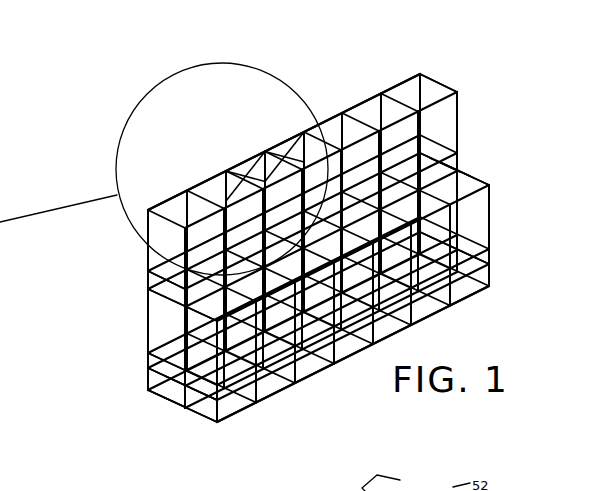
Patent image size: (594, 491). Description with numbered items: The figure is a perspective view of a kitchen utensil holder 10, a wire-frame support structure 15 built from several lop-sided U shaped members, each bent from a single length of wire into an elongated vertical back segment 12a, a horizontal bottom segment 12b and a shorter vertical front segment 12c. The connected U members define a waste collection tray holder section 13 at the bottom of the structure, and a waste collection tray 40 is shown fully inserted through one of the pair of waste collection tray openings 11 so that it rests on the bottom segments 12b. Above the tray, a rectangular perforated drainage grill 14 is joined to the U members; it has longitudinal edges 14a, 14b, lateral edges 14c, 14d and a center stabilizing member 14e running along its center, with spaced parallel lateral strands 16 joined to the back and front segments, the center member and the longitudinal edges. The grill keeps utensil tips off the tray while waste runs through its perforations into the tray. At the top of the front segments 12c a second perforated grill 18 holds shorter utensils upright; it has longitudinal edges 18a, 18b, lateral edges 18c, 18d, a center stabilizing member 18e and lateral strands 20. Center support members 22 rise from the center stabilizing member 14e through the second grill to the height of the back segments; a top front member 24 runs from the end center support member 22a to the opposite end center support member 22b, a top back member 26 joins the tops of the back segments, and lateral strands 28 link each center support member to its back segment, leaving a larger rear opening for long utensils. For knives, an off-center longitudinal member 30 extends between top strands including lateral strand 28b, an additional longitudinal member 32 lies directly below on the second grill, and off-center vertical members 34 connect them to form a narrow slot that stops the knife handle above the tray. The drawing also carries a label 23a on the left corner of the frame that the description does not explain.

The kitchen utensil holder 10 is at (560, 348).
The waste collection tray opening 11 is at (213, 427).
The vertical back segment 12a is at (150, 278).
The horizontal bottom segment 12b is at (165, 395).
The vertical front segment 12c is at (220, 405).
The waste collection tray holder section 13 is at (143, 372).
The perforated drainage grill 14 is at (147, 365).
The longitudinal edge 14a is at (153, 353).
The longitudinal edge 14b is at (308, 352).
The lateral edge 14c is at (175, 372).
The lateral edge 14d is at (490, 273).
The center stabilizing member 14e is at (205, 375).
The support structure 15 is at (490, 220).
The lateral strands 16 is at (272, 377).
The second rectangular perforated grill 18 is at (463, 182).
The longitudinal edge 18a is at (160, 272).
The longitudinal edge 18b is at (490, 193).
The lateral edge 18c is at (155, 293).
The lateral edge 18d is at (470, 170).
The center stabilizing member 18e is at (470, 165).
The lateral strands 20 is at (400, 262).
The center support members 22 is at (297, 150).
The center support member 22a is at (185, 197).
The center support member 22b is at (460, 110).
The corner post 23a is at (152, 221).
The top front member 24 is at (265, 150).
The top back member 26 is at (240, 160).
The lateral strands 28 is at (197, 188).
The lateral strand 28b is at (432, 84).
The off-center longitudinal member 30 is at (303, 147).
The additional longitudinal member 32 is at (220, 170).
The off-center vertical members 34 is at (280, 138).
The waste collection tray 40 is at (350, 345).